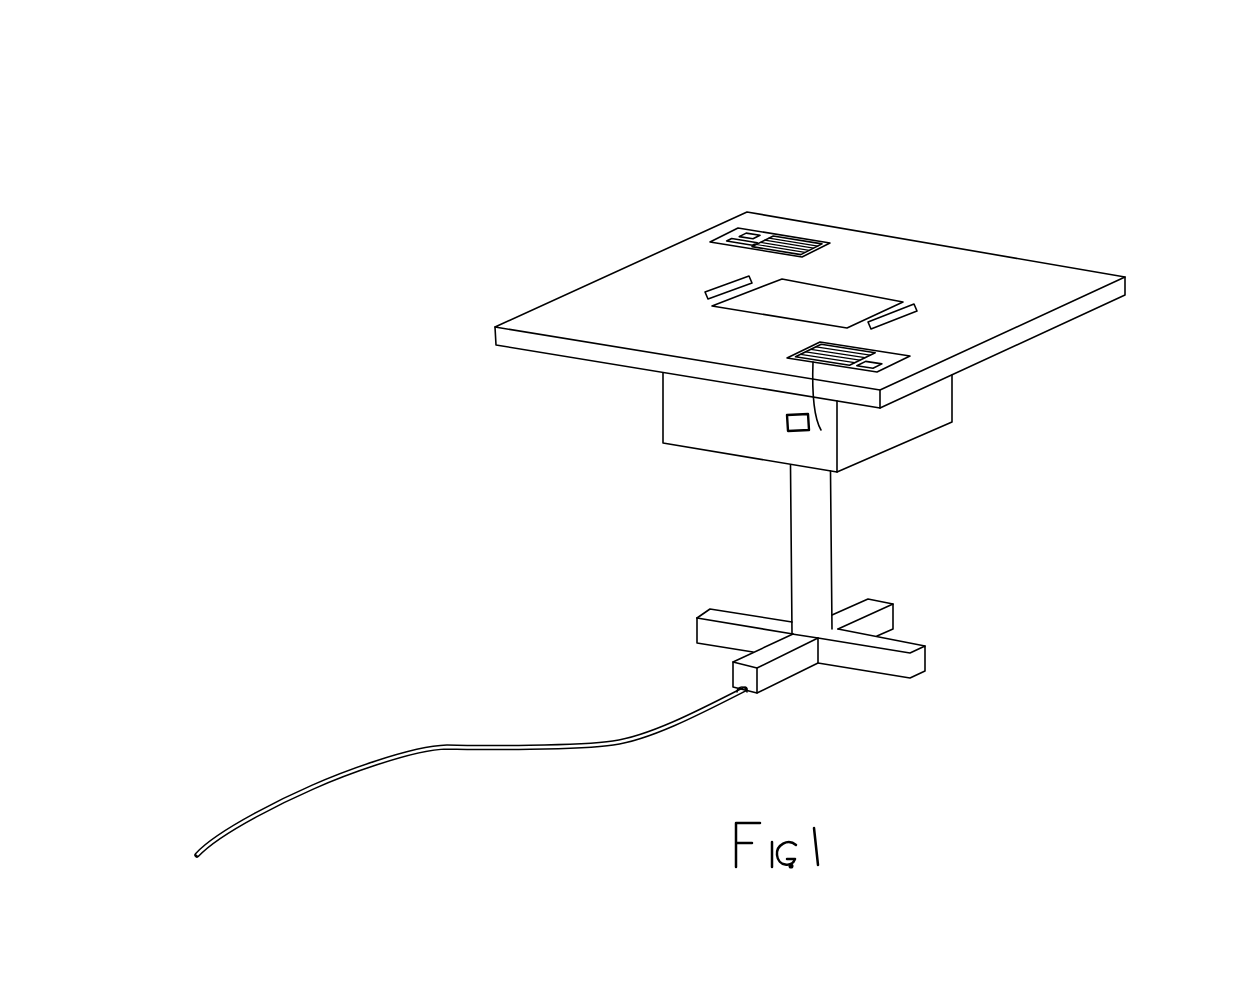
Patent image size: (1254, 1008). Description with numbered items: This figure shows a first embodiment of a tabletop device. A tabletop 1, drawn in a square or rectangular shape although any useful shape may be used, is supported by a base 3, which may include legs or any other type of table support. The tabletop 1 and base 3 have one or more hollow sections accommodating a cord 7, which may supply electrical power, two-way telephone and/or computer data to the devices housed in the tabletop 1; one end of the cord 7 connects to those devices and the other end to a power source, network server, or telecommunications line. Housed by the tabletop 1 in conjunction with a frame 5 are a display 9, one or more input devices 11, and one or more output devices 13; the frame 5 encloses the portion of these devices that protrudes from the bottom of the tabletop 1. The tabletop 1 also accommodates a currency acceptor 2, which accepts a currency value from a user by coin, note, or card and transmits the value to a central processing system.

The tabletop 1 is at (1075, 285).
The currency acceptor 2 is at (810, 445).
The base 3 is at (942, 671).
The frame 5 is at (707, 447).
The cord 7 is at (566, 730).
The display 9 is at (775, 318).
The input devices 11 is at (1111, 165).
The output devices 13 is at (760, 273).